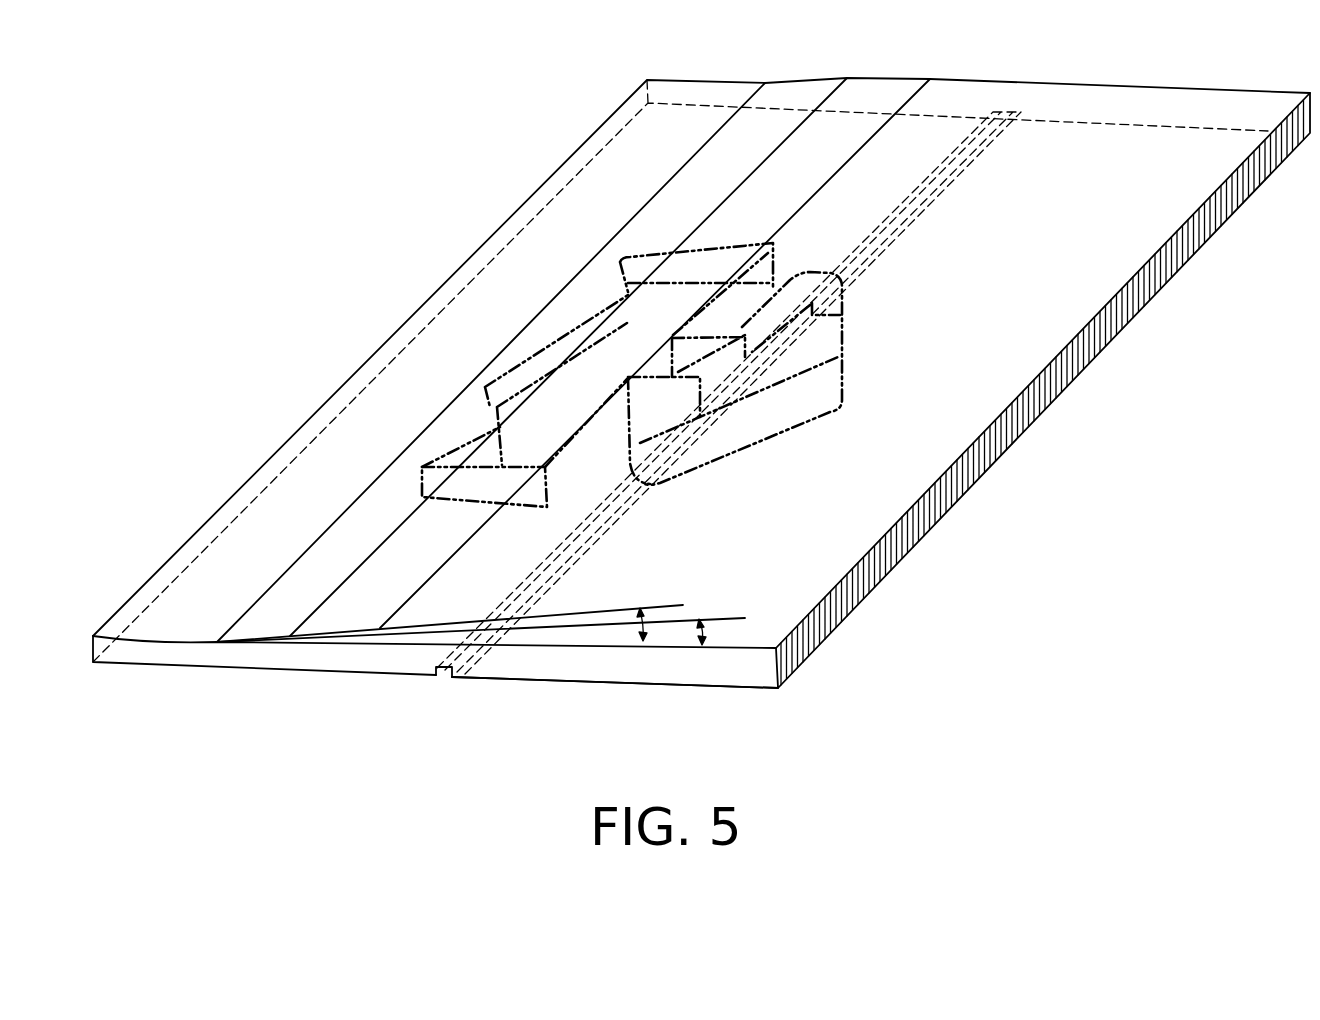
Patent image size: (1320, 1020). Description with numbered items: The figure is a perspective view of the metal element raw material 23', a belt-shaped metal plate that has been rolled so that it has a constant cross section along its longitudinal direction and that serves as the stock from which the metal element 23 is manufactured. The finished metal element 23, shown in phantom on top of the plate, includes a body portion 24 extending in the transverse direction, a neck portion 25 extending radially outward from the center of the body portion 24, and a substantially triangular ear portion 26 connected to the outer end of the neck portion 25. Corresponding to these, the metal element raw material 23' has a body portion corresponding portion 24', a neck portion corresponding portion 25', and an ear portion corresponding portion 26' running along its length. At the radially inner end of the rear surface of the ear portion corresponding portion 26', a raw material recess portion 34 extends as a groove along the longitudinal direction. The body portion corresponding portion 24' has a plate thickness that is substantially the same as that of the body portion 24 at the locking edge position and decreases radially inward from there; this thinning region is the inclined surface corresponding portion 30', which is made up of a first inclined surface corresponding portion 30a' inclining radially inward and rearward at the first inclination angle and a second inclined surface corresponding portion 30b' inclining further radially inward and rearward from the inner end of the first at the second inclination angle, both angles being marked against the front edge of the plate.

The metal element raw material 23' is at (701, 358).
The inclined surface corresponding portion 30' is at (563, 360).
The first inclined surface corresponding portion 30a' is at (592, 353).
The second inclined surface corresponding portion 30b' is at (524, 360).
The body portion corresponding portion 24' is at (450, 675).
The neck portion corresponding portion 25' is at (481, 673).
The ear portion corresponding portion 26' is at (615, 710).
The raw material recess portion 34 is at (441, 678).
The metal element 23 is at (690, 339).
The body portion 24 is at (597, 339).
The neck portion 25 is at (696, 341).
The ear portion 26 is at (793, 378).